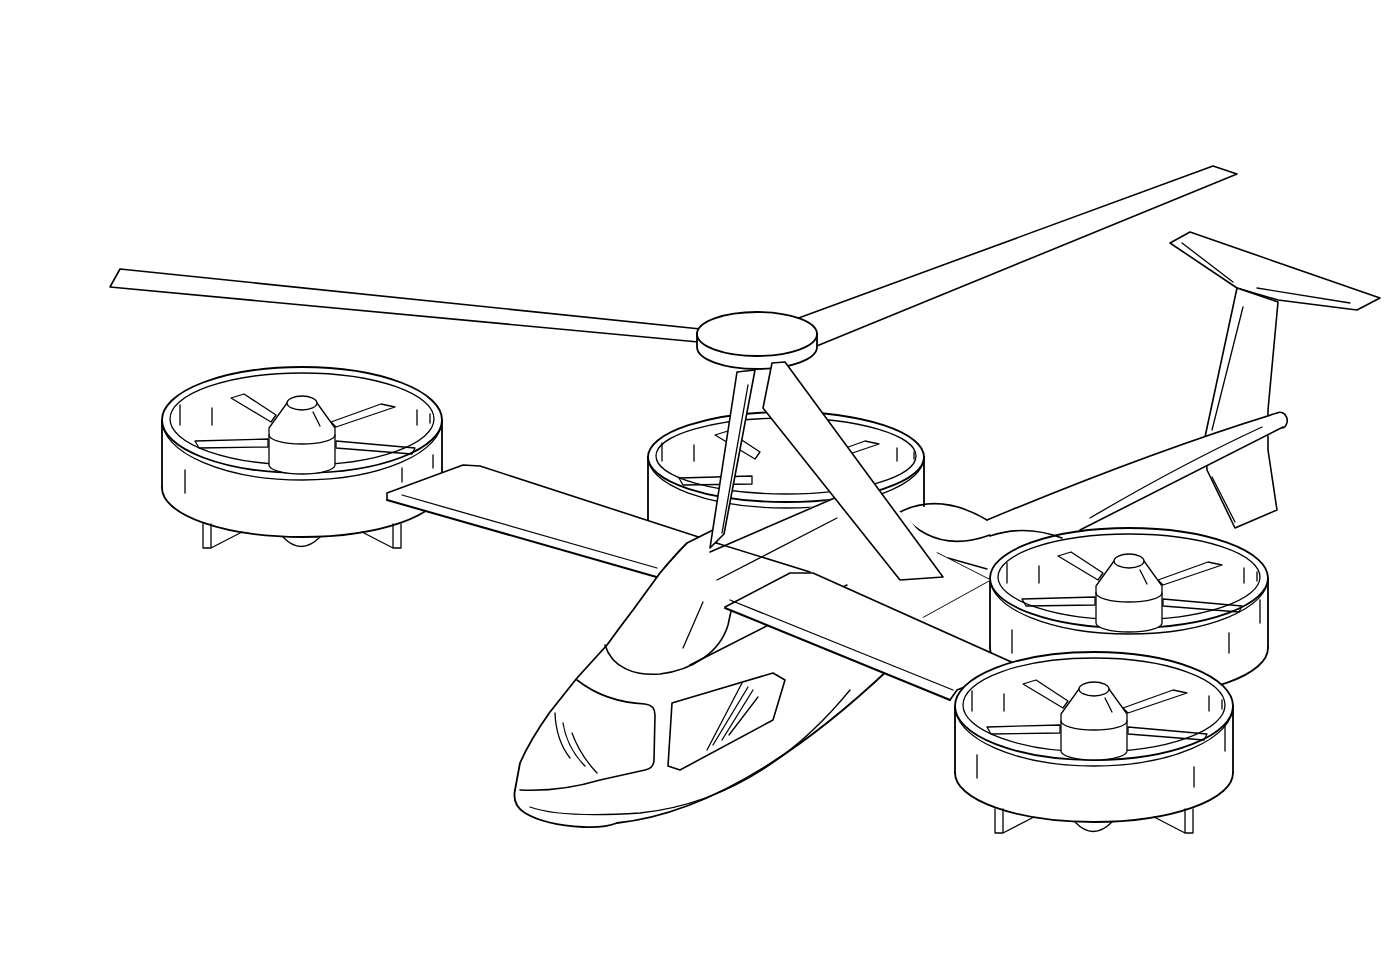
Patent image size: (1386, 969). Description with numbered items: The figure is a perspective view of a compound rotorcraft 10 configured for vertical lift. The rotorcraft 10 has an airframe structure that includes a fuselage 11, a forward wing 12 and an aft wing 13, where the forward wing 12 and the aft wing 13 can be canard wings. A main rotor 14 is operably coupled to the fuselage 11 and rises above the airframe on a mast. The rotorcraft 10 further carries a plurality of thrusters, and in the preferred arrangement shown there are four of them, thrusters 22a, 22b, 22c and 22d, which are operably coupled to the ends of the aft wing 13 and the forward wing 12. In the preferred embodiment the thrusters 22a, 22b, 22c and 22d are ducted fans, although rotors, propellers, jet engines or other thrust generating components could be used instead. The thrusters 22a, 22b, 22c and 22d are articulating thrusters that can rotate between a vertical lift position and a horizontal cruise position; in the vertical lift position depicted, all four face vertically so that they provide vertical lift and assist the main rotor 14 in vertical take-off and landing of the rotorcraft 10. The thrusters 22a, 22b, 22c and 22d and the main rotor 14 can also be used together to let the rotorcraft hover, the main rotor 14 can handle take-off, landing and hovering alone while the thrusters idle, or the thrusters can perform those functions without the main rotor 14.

The compound rotorcraft 10 is at (322, 120).
The fuselage 11 is at (581, 830).
The forward wing 12 is at (545, 494).
The aft wing 13 is at (986, 547).
The main rotor 14 is at (750, 320).
The thruster 22a is at (880, 424).
The thruster 22b is at (1270, 614).
The thruster 22c is at (1234, 736).
The thruster 22d is at (160, 449).